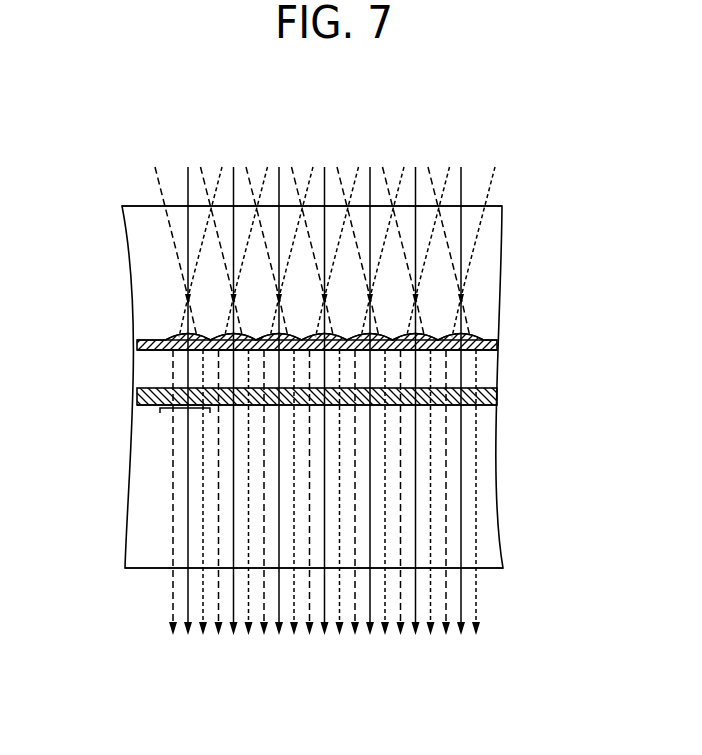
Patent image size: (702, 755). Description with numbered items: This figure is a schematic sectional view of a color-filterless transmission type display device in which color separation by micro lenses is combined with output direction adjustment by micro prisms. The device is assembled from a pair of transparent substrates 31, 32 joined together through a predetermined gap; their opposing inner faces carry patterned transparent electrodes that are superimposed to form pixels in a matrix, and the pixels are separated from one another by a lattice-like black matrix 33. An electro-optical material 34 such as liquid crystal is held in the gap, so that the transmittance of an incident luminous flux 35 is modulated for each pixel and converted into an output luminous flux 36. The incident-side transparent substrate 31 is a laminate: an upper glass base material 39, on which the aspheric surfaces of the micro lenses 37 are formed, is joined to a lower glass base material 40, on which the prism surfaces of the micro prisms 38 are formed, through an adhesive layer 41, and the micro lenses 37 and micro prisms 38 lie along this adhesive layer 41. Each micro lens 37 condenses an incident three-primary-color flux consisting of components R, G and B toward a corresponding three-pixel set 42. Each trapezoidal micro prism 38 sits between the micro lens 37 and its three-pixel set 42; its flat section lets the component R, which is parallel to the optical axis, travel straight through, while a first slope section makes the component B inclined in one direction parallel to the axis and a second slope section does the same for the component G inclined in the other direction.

The transparent substrate 31 is at (512, 258).
The transparent substrate 32 is at (487, 512).
The black matrix 33 is at (481, 405).
The electro-optical material 34 is at (497, 396).
The incident luminous flux 35 is at (332, 367).
The output luminous flux 36 is at (492, 589).
The micro lens 37 is at (178, 335).
The micro prism 38 is at (180, 352).
The upper glass base material 39 is at (490, 297).
The lower glass base material 40 is at (487, 368).
The adhesive layer 41 is at (497, 341).
The three-pixel set 42 is at (175, 415).
The R component R is at (187, 167).
The G component G is at (222, 167).
The B component B is at (152, 178).